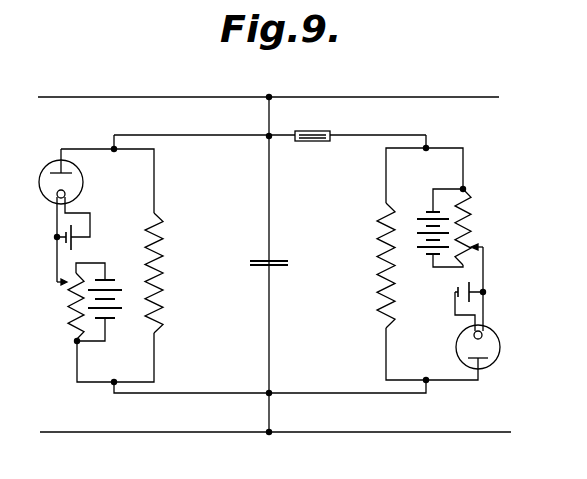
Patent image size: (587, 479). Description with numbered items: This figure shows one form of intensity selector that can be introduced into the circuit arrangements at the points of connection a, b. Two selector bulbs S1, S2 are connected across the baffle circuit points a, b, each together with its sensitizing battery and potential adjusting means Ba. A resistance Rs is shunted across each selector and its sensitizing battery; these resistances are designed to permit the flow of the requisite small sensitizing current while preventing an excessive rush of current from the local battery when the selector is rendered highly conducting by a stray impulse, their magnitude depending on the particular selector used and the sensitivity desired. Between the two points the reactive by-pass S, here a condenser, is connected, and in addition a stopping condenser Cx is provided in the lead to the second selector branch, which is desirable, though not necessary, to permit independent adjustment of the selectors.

The baffle circuit point a is at (268, 83).
The baffle circuit point b is at (275, 447).
The reactive by-pass S is at (281, 257).
The stopping condenser Cx is at (270, 123).
The selector bulb S1 is at (50, 221).
The selector bulb S2 is at (498, 308).
The sensitizing battery and potential adjusting means Ba is at (272, 265).
The resistance Rs is at (270, 268).